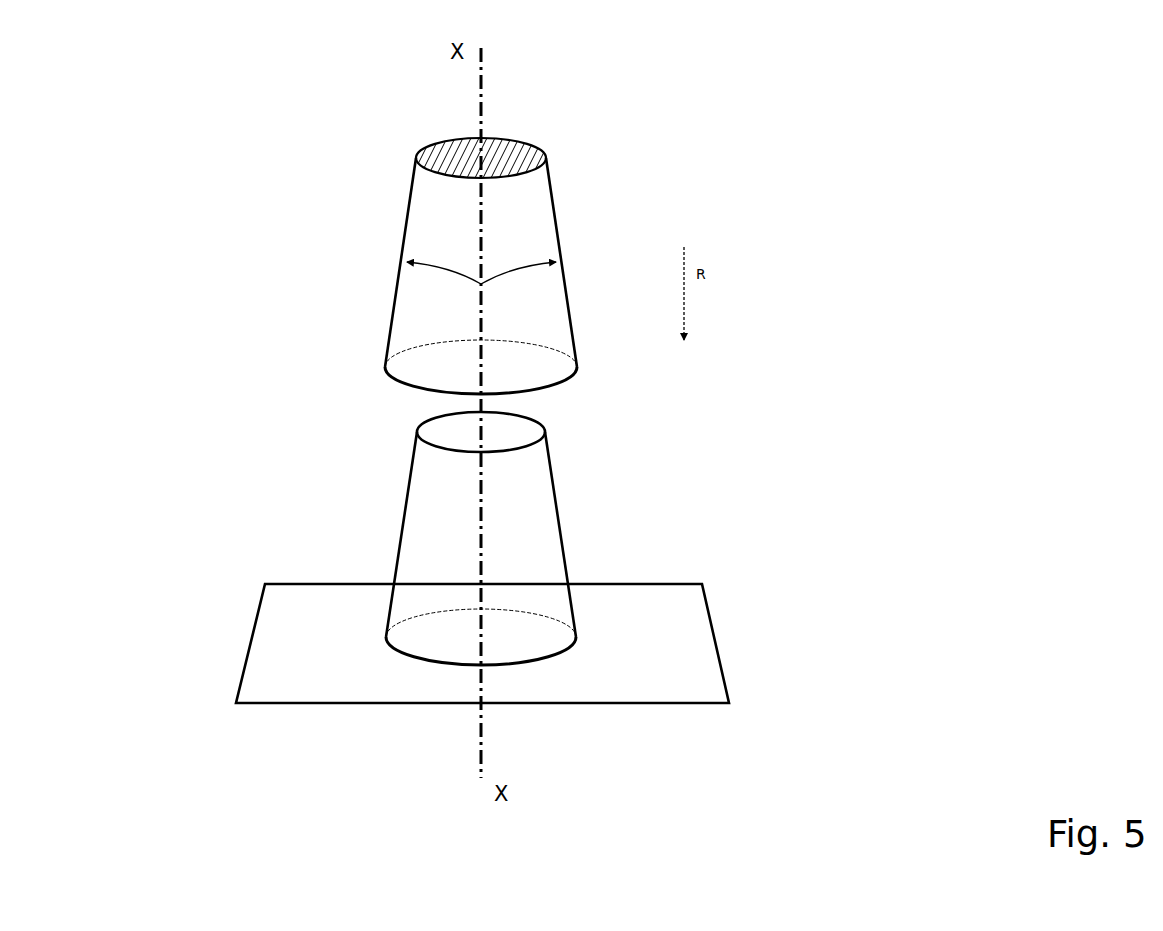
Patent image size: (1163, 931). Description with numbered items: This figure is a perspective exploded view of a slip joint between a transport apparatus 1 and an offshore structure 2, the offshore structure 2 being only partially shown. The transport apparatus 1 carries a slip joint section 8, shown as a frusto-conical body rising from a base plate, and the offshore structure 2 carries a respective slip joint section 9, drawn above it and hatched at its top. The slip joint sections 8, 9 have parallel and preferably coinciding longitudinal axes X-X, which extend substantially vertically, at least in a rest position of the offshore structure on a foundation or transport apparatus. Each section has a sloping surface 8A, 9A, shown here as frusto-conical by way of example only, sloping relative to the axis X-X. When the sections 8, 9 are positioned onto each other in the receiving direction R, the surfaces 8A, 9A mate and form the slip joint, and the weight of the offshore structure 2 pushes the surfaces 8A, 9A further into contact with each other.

The transport apparatus 1 is at (230, 521).
The offshore structure 2 is at (356, 192).
The slip joint section 8 is at (400, 512).
The sloping surface 8A is at (565, 593).
The slip joint section 9 is at (481, 284).
The sloping surface 9A is at (565, 318).